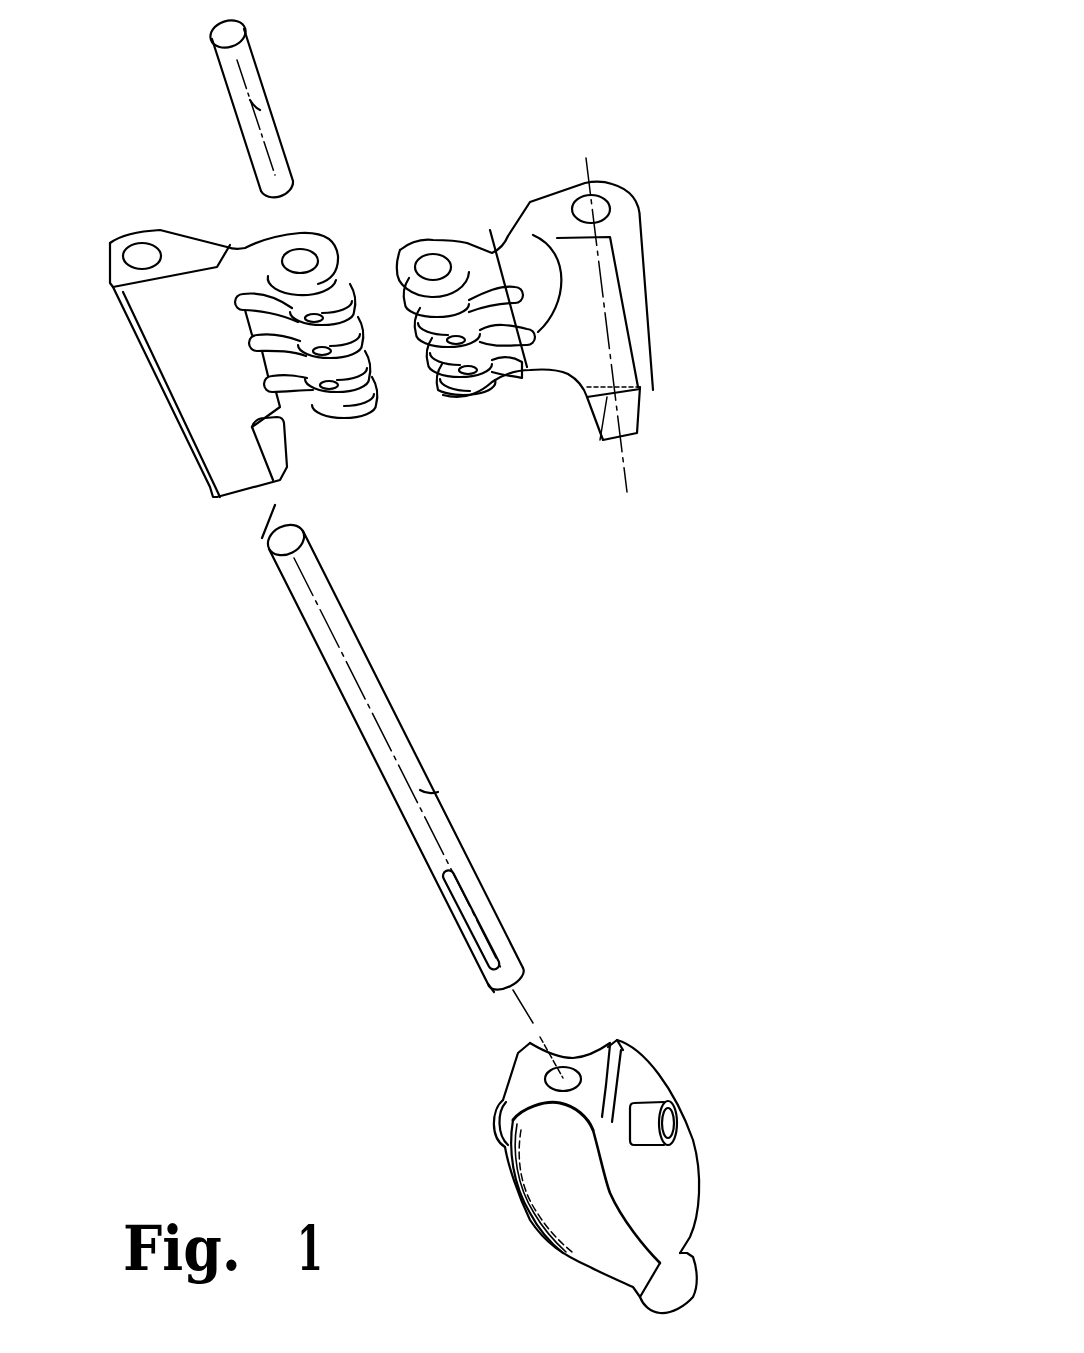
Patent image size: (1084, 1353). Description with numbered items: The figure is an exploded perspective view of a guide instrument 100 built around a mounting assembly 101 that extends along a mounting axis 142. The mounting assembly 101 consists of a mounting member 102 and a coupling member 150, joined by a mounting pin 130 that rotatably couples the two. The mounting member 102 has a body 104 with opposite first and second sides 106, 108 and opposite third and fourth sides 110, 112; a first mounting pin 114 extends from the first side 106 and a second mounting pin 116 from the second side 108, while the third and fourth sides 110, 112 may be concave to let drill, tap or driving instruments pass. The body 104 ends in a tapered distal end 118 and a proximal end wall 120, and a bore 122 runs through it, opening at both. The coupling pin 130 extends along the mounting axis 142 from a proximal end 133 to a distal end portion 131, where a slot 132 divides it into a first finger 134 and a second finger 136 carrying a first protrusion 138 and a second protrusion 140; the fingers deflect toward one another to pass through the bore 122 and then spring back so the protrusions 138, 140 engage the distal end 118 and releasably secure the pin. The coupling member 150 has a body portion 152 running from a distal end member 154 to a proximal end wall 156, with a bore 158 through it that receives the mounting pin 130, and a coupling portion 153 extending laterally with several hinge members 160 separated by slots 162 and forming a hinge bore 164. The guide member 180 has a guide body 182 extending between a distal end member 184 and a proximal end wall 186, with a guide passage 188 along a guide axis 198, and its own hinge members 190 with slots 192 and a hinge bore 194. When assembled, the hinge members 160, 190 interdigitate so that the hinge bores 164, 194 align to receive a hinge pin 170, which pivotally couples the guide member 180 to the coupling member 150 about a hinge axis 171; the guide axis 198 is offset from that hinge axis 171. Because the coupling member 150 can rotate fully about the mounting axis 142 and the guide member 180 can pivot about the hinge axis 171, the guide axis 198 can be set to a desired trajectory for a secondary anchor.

The guide instrument 100 is at (628, 659).
The mounting assembly 101 is at (212, 700).
The mounting member 102 is at (670, 1064).
The body 104 is at (697, 1170).
The first side 106 is at (675, 1190).
The second side 108 is at (510, 1170).
The third side 110 is at (545, 1222).
The fourth side 112 is at (617, 1040).
The first mounting pin 114 is at (678, 1122).
The second mounting pin 116 is at (495, 1122).
The tapered distal end 118 is at (695, 1280).
The proximal end wall 120 is at (623, 1040).
The bore 122 is at (565, 1065).
The mounting pin 130 is at (388, 668).
The distal end portion 131 is at (490, 880).
The slot 132 is at (468, 920).
The proximal end 133 is at (305, 542).
The first finger 134 is at (494, 918).
The second finger 136 is at (443, 873).
The first protrusion 138 is at (527, 972).
The second protrusion 140 is at (490, 985).
The mounting axis 142 is at (270, 528).
The coupling member 150 is at (170, 422).
The body portion 152 is at (148, 348).
The coupling portion 153 is at (237, 252).
The distal end member 154 is at (278, 455).
The proximal end wall 156 is at (135, 245).
The bore 158 is at (142, 250).
The hinge members 160 is at (350, 338).
The slots 162 is at (266, 376).
The hinge bore 164 is at (300, 262).
The hinge pin 170 is at (300, 124).
The hinge axis 171 is at (258, 110).
The guide member 180 is at (648, 240).
The guide body 182 is at (640, 280).
The distal end member 184 is at (642, 398).
The proximal end wall 186 is at (622, 210).
The guide passage 188 is at (598, 200).
The hinge members 190 is at (403, 300).
The slots 192 is at (500, 232).
The hinge bore 194 is at (433, 265).
The guide axis 198 is at (625, 470).